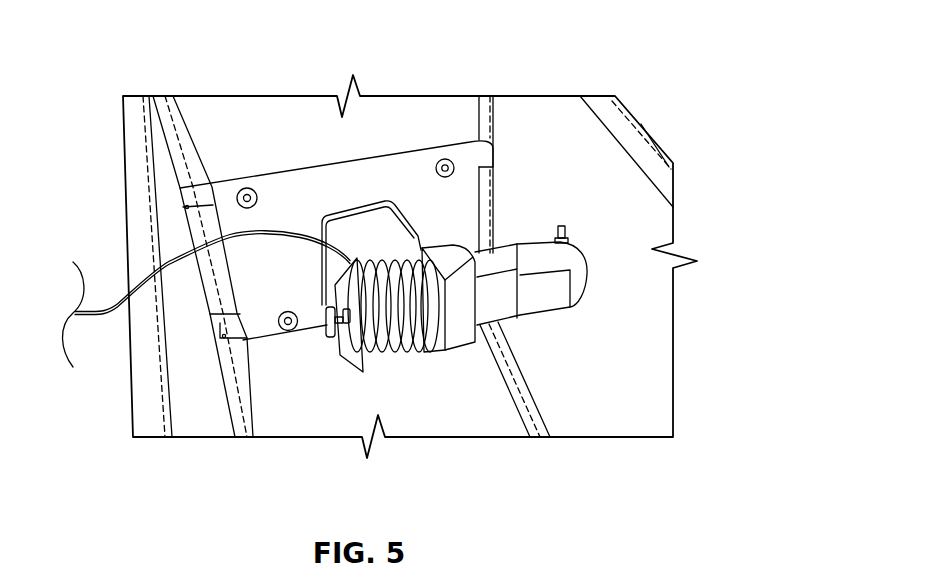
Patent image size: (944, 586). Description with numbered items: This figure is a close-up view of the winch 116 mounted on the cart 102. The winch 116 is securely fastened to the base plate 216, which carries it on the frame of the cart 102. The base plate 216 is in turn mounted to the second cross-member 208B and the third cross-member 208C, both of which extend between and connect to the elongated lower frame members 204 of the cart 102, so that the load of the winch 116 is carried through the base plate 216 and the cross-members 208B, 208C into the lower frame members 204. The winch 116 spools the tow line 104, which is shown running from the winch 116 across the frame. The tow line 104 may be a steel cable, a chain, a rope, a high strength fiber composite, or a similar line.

The cart 102 is at (175, 86).
The tow line 104 is at (177, 243).
The winch 116 is at (432, 212).
The elongated lower frame members 204 is at (232, 393).
The second cross-member 208B is at (204, 188).
The third cross-member 208C is at (230, 323).
The base plate 216 is at (289, 215).